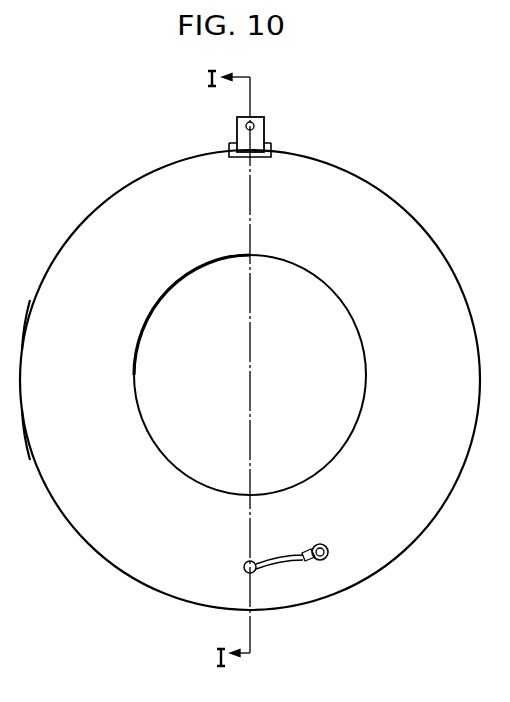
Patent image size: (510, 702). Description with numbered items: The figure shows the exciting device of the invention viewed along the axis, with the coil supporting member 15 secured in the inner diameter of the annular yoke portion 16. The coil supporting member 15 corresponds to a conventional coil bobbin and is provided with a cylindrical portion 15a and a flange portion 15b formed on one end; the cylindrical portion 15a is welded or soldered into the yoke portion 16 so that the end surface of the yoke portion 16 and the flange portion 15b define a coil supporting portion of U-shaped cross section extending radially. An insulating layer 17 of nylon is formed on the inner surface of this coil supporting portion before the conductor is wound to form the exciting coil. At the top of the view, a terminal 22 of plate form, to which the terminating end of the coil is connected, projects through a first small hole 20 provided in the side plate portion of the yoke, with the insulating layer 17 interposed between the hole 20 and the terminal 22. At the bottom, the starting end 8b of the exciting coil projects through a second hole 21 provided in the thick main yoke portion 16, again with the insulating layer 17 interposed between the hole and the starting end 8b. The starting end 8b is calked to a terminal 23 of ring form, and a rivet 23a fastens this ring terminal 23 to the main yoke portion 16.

The coil supporting member 15 is at (0, 146).
The cylindrical portion 15a is at (0, 102).
The flange portion 15b is at (0, 178).
The yoke portion 16 is at (62, 494).
The insulating layer 17 is at (229, 144).
The first small hole 20 is at (274, 147).
The second hole 21 is at (249, 573).
The terminal of a plate form 22 is at (246, 125).
The starting end 8b is at (278, 560).
The terminal of a ring form 23 is at (310, 552).
The rivet 23a is at (329, 551).